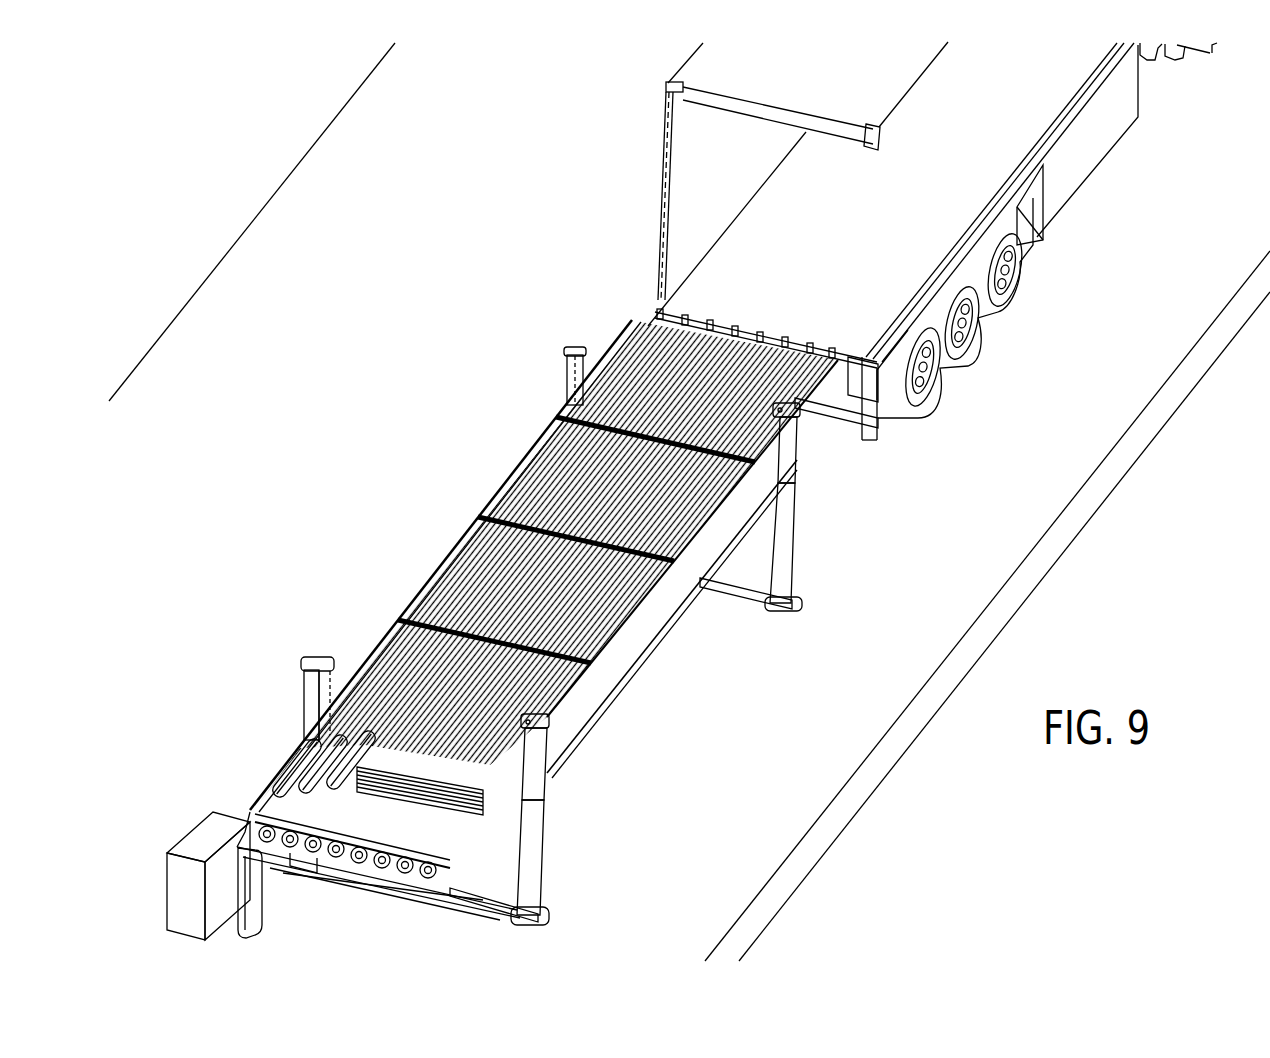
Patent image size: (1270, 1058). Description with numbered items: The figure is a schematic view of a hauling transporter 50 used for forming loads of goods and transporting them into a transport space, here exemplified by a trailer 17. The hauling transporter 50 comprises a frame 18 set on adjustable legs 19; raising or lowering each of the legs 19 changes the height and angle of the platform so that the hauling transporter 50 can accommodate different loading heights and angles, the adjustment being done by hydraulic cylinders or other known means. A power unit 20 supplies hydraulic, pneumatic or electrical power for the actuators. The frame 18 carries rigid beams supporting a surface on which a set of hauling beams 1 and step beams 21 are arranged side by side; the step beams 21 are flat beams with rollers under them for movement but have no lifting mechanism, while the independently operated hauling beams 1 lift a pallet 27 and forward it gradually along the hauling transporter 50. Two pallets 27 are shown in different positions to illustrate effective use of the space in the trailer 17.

The hauling beam 1 is at (523, 630).
The trailer 17 is at (1010, 145).
The frame 18 is at (623, 665).
The adjustable legs 19 is at (784, 528).
The power unit 20 is at (200, 808).
The step beam 21 is at (400, 618).
The pallet 27 is at (307, 763).
The hauling transporter 50 is at (507, 480).